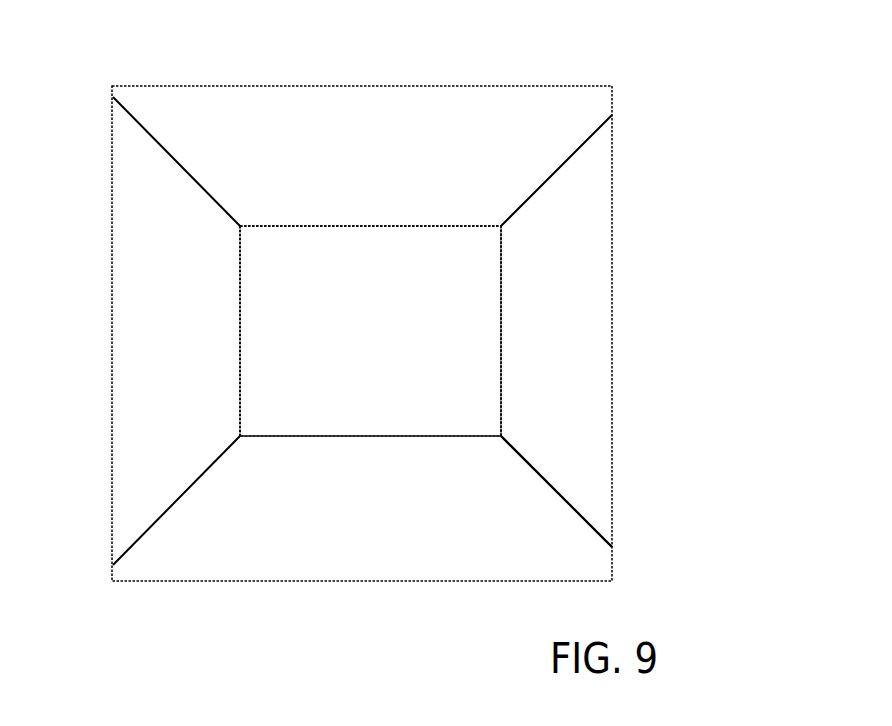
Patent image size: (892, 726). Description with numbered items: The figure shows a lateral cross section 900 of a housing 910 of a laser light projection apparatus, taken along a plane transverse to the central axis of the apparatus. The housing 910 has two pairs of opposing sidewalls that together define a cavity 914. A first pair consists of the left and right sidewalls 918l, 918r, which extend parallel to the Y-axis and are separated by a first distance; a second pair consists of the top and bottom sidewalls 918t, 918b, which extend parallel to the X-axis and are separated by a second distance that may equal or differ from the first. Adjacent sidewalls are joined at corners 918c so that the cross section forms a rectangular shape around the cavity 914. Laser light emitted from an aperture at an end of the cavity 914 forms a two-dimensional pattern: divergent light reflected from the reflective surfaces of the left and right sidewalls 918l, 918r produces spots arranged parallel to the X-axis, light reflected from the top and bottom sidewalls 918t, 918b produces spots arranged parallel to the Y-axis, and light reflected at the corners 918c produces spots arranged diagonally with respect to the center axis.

The lateral cross section 900 is at (697, 72).
The housing 910 is at (557, 159).
The cavity 914 is at (463, 293).
The top sidewall 918t is at (330, 228).
The bottom sidewall 918b is at (330, 434).
The left sidewall 918l is at (240, 300).
The right sidewall 918r is at (502, 300).
The corners 918c is at (502, 436).